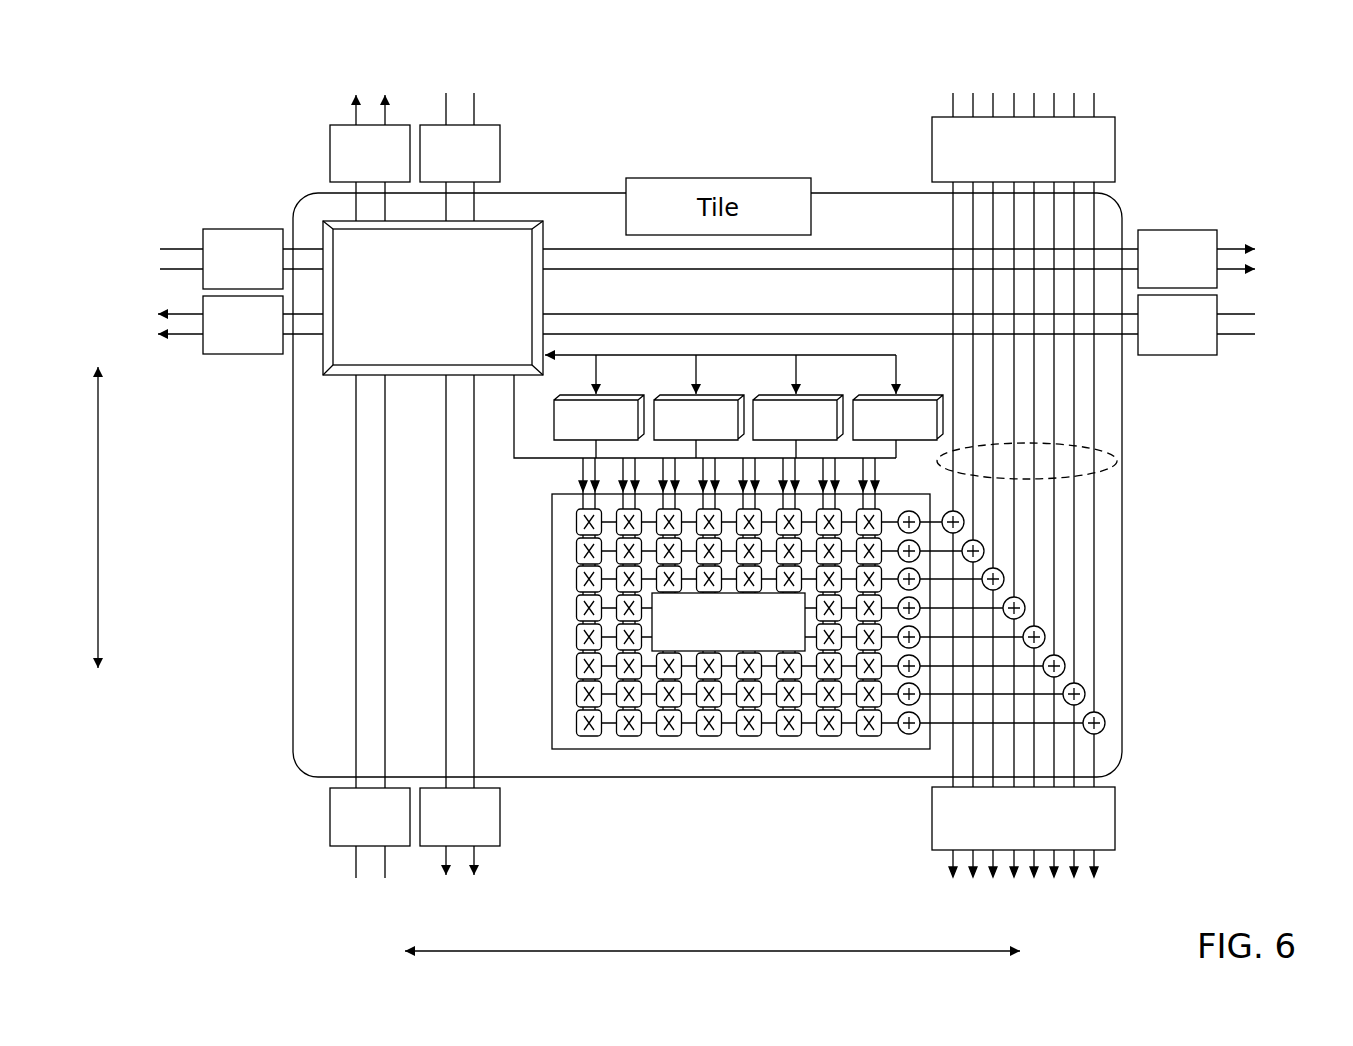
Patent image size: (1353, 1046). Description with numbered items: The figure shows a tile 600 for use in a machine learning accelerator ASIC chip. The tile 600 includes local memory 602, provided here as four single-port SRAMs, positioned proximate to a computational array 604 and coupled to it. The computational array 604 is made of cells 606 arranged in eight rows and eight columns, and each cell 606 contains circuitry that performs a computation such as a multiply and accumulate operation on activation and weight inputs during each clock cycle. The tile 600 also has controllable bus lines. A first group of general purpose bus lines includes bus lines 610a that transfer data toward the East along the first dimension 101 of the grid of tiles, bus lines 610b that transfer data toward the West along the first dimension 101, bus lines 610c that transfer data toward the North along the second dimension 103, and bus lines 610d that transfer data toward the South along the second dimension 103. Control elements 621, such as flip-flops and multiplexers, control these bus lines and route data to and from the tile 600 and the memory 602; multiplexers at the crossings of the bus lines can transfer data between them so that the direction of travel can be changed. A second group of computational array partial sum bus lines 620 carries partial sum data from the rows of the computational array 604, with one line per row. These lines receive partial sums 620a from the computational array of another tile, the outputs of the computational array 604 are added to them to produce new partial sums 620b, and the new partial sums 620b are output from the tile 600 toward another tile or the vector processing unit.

The tile 600 is at (180, 85).
The first dimension 101 is at (712, 950).
The second dimension 103 is at (103, 520).
The local memory 602 is at (583, 394).
The computational array 604 is at (741, 647).
The cell 606 is at (589, 740).
The bus lines 610a is at (147, 232).
The bus lines 610b is at (1258, 293).
The bus lines 610c is at (330, 882).
The bus lines 610d is at (420, 80).
The computational array partial sum bus lines 620 is at (1105, 453).
The partial sums 620a is at (1115, 152).
The new partial sums 620b is at (1115, 813).
The control elements 621 is at (357, 333).